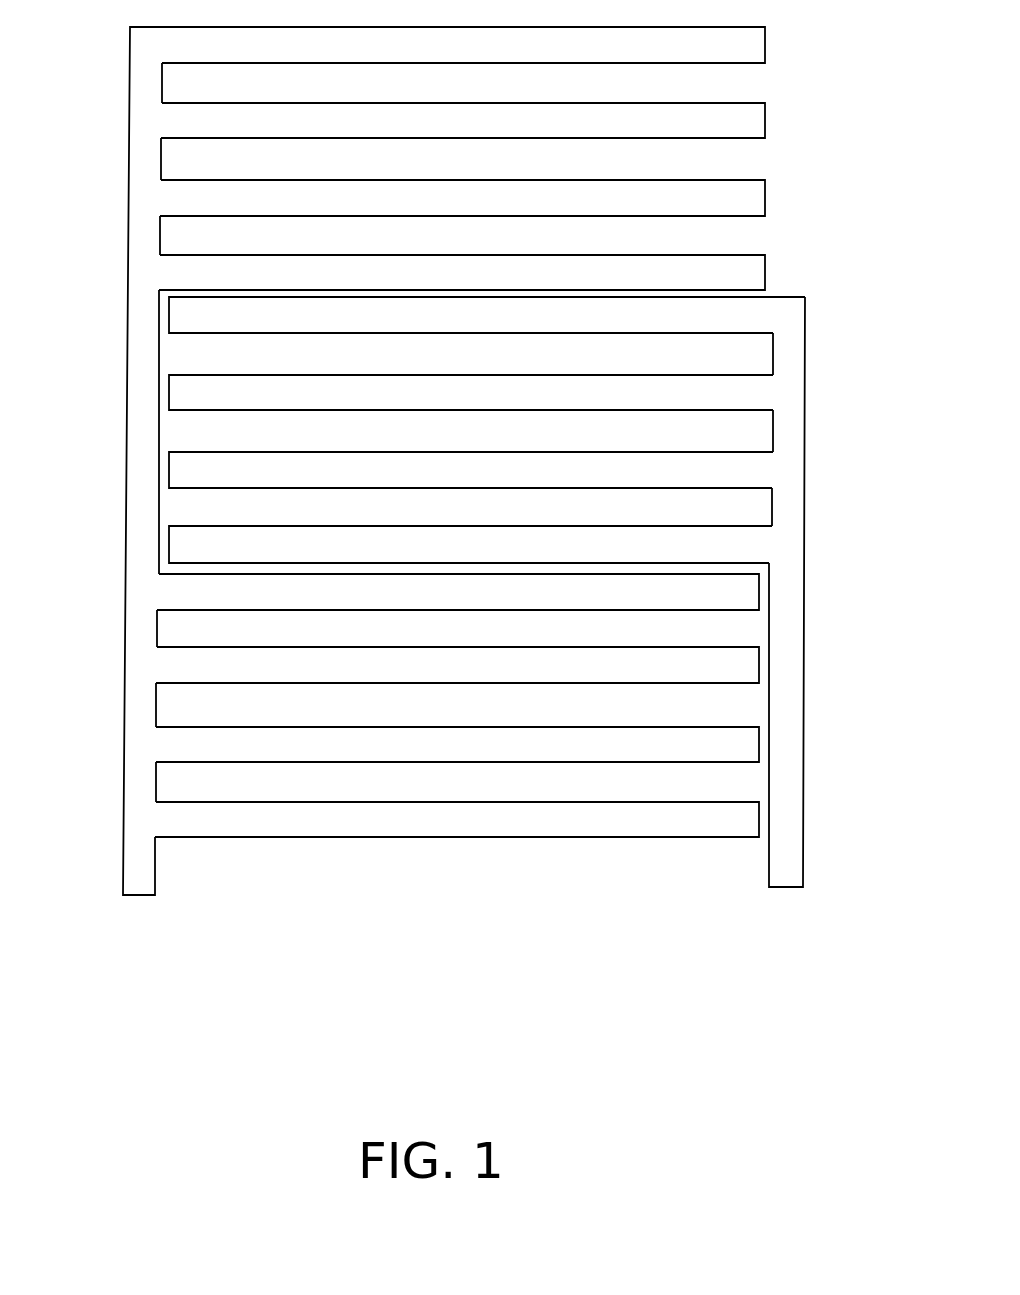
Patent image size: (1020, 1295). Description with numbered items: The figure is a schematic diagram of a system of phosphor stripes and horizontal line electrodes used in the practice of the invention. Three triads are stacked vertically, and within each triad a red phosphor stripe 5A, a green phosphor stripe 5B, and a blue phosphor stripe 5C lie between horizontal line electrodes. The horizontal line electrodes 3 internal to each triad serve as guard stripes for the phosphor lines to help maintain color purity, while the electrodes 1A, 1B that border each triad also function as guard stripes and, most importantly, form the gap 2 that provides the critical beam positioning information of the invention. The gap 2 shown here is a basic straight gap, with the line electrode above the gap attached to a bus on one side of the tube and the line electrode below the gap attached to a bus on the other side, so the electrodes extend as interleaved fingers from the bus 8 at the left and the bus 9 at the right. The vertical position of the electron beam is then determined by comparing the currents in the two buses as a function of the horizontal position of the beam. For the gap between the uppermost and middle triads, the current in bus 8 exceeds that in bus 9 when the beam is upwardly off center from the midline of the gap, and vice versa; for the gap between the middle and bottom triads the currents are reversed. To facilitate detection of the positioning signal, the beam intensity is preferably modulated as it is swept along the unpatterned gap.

The horizontal line electrode bordering a triad 1A is at (463, 546).
The horizontal line electrode bordering a triad 1B is at (481, 318).
The gap 2 is at (786, 283).
The horizontal line electrode 3 is at (464, 432).
The red phosphor stripe 5A is at (267, 354).
The green phosphor stripe 5B is at (268, 437).
The blue phosphor stripe 5C is at (265, 515).
The bus 8 is at (140, 411).
The bus 9 is at (788, 442).